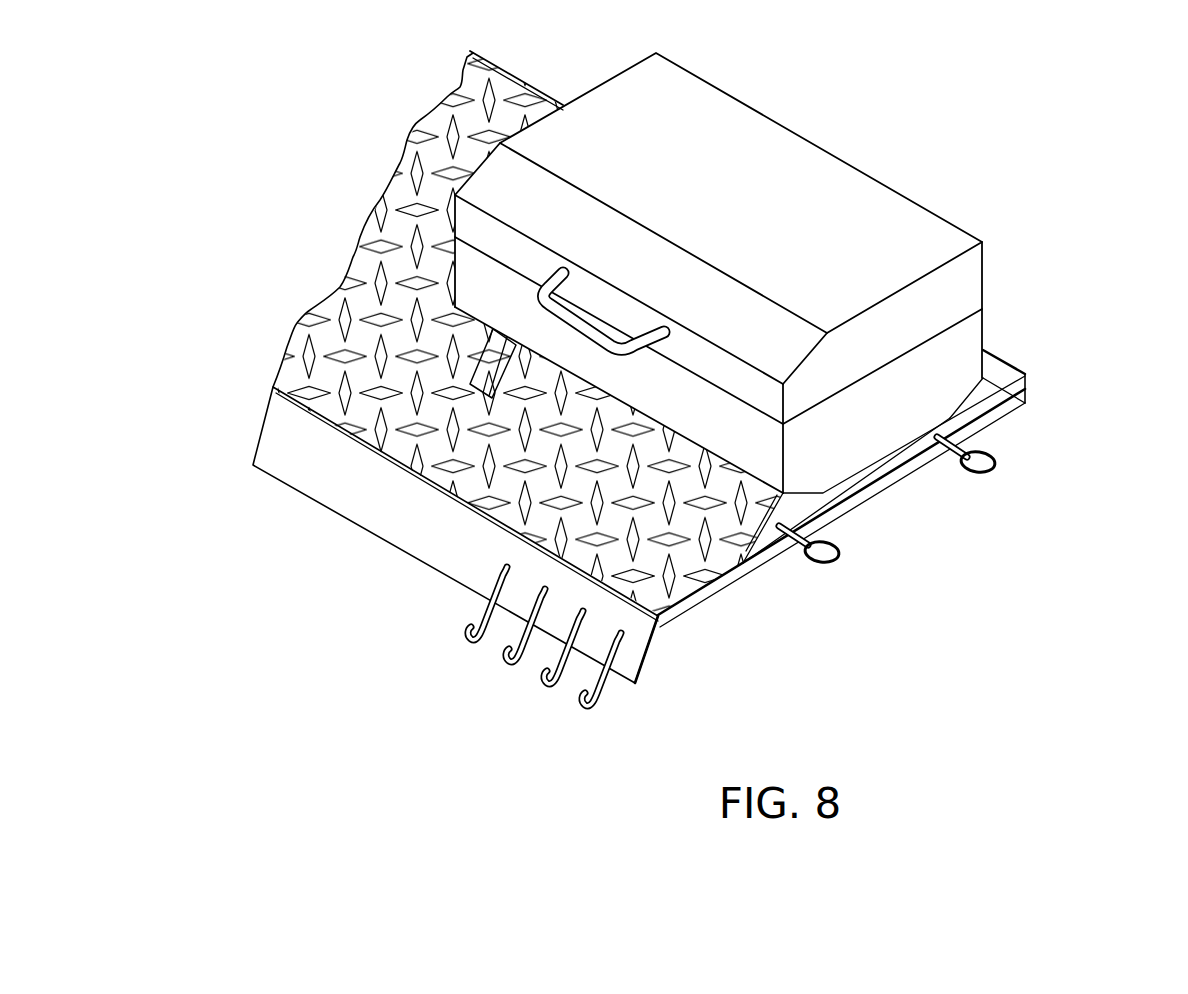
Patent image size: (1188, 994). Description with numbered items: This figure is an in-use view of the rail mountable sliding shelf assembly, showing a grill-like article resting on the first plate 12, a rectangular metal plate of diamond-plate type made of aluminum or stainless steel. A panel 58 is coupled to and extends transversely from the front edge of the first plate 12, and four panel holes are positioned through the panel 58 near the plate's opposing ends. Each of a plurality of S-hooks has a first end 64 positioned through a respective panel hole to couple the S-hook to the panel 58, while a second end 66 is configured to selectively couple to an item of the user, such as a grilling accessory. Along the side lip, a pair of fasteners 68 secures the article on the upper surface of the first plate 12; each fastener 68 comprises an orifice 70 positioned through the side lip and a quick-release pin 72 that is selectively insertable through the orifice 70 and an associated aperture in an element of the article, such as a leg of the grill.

The first plate 12 is at (393, 393).
The panel 58 is at (422, 535).
The first end 64 is at (651, 640).
The second end 66 is at (589, 705).
The fastener 68 is at (838, 542).
The orifice 70 is at (1020, 372).
The pin 72 is at (980, 447).